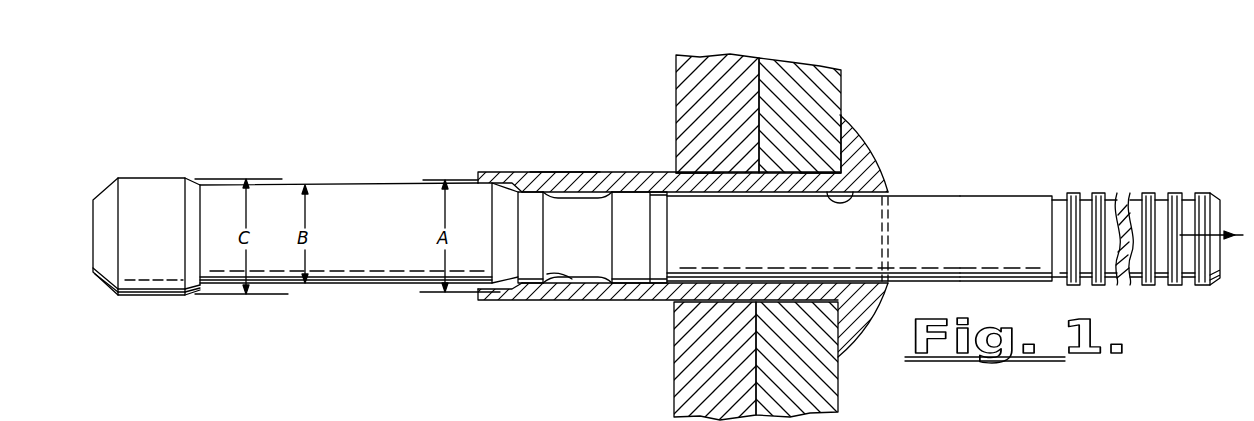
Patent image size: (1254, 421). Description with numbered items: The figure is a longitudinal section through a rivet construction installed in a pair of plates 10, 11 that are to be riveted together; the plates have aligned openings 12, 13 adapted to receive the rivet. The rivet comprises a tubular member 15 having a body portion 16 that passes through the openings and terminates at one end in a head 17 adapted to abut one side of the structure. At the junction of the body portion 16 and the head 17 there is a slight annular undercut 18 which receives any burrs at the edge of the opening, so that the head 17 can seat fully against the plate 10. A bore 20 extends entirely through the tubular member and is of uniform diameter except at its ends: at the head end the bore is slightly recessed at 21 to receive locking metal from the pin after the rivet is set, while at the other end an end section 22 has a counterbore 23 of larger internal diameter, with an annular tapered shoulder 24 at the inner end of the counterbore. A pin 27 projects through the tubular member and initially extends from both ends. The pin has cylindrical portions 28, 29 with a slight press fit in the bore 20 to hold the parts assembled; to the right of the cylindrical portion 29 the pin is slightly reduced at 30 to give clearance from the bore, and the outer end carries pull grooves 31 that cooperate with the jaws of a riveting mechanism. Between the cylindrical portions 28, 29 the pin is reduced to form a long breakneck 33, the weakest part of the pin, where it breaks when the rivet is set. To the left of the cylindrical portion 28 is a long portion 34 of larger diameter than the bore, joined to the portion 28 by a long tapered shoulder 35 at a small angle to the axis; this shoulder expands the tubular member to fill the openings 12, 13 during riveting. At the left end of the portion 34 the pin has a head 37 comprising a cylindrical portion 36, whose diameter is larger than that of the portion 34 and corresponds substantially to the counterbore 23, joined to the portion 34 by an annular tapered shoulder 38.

The plate 10 is at (827, 95).
The plate 11 is at (688, 87).
The opening 12 is at (815, 165).
The opening 13 is at (692, 172).
The tubular member 15 is at (690, 296).
The body portion 16 is at (647, 300).
The head 17 is at (868, 168).
The annular undercut 18 is at (865, 157).
The bore 20 is at (883, 177).
The recess 21 is at (888, 197).
The end section 22 is at (512, 172).
The counterbore 23 is at (497, 172).
The tapered shoulder 24 is at (540, 171).
The pin 27 is at (913, 262).
The cylindrical portion 28 is at (528, 282).
The cylindrical portion 29 is at (627, 277).
The reduced portion 30 is at (997, 272).
The pull grooves 31 is at (1087, 278).
The breakneck 33 is at (572, 280).
The portion of larger diameter 34 is at (353, 277).
The tapered shoulder 35 is at (497, 293).
The cylindrical portion 36 is at (183, 294).
The head 37 is at (151, 298).
The tapered shoulder 38 is at (198, 180).